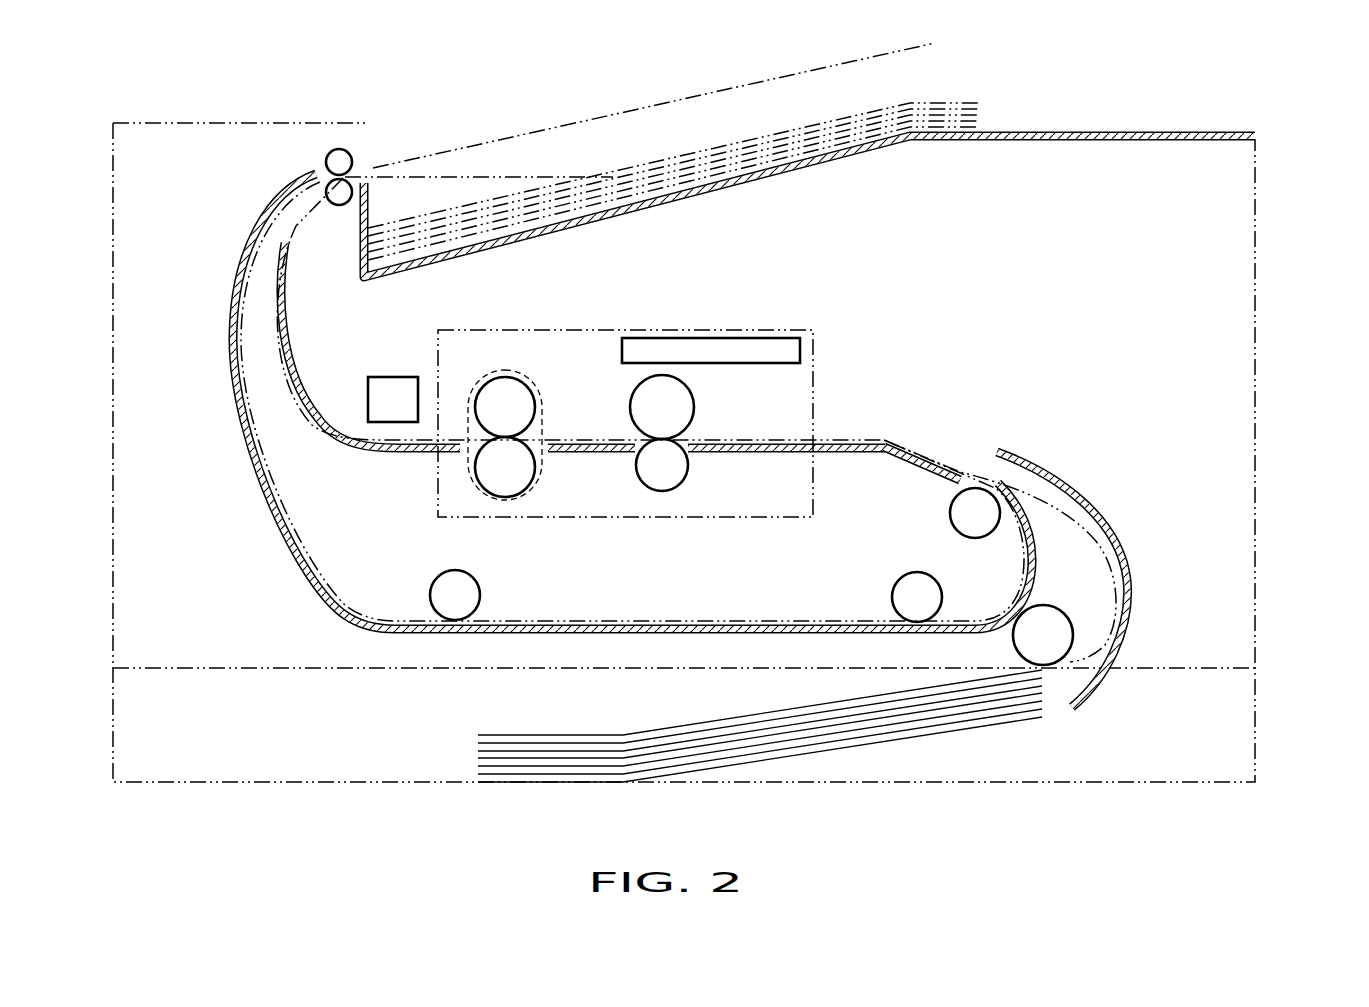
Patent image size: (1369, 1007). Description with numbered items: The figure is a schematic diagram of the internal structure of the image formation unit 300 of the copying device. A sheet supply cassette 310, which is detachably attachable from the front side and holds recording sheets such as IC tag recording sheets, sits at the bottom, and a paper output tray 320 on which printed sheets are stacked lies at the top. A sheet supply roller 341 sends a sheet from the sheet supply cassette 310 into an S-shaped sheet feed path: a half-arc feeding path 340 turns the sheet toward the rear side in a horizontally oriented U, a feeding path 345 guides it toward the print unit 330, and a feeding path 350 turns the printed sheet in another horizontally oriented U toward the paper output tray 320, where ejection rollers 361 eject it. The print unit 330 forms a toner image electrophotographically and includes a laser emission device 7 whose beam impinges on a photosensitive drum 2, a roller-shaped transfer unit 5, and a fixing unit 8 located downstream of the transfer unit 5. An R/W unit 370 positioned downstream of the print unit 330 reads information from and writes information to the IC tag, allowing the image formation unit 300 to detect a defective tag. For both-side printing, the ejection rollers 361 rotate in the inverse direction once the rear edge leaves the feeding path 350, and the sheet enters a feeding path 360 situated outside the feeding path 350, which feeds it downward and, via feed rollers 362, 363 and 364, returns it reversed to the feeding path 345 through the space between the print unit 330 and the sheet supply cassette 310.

The photosensitive drum 2 is at (685, 407).
The transfer unit 5 is at (640, 470).
The laser emission device 7 is at (781, 365).
The fixing unit 8 is at (540, 395).
The image formation unit 300 is at (1157, 99).
The sheet supply cassette 310 is at (1255, 703).
The paper output tray 320 is at (1060, 130).
The print unit 330 is at (743, 330).
The feeding path 340 is at (1097, 522).
The sheet supply roller 341 is at (1080, 585).
The feeding path 345 is at (897, 455).
The feeding path 350 is at (300, 368).
The feeding path 360 is at (286, 540).
The ejection rollers 361 is at (365, 183).
The feed roller 362 is at (478, 579).
The feed roller 363 is at (892, 591).
The feed roller 364 is at (952, 535).
The R/W unit 370 is at (392, 377).